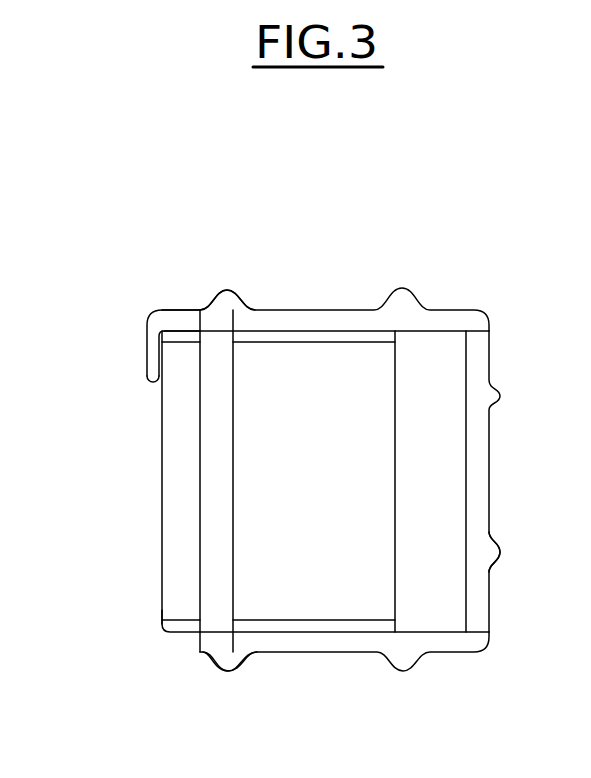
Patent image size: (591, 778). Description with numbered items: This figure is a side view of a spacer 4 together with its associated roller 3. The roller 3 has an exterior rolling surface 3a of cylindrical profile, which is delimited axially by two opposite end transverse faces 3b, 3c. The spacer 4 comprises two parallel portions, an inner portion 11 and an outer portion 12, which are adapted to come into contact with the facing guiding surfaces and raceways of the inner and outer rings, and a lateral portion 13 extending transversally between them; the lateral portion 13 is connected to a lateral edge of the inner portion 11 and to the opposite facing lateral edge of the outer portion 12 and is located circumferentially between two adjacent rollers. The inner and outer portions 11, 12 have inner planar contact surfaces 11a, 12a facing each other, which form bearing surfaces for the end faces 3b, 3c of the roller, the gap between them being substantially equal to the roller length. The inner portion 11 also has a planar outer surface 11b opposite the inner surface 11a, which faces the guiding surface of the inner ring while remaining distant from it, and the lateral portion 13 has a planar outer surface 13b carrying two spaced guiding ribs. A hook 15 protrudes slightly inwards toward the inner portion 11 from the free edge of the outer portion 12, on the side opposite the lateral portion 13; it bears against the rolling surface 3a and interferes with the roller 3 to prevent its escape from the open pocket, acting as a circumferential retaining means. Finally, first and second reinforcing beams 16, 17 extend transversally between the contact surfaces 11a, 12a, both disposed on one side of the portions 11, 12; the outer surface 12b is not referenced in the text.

The roller 3 is at (308, 482).
The exterior rolling surface 3a is at (162, 489).
The end transverse face 3b is at (181, 633).
The end transverse face 3c is at (182, 330).
The spacer 4 is at (165, 222).
The inner portion 11 is at (318, 661).
The inner planar contact surface 11a is at (373, 627).
The planar outer surface 11b is at (274, 652).
The outer portion 12 is at (311, 302).
The inner planar contact surface 12a is at (370, 329).
The projection of upper frame member 12b is at (273, 310).
The lateral portion 13 is at (503, 482).
The planar outer surface 13b is at (492, 530).
The hook 15 is at (148, 367).
The first reinforcing beam 16 is at (208, 430).
The second reinforcing beam 17 is at (420, 430).